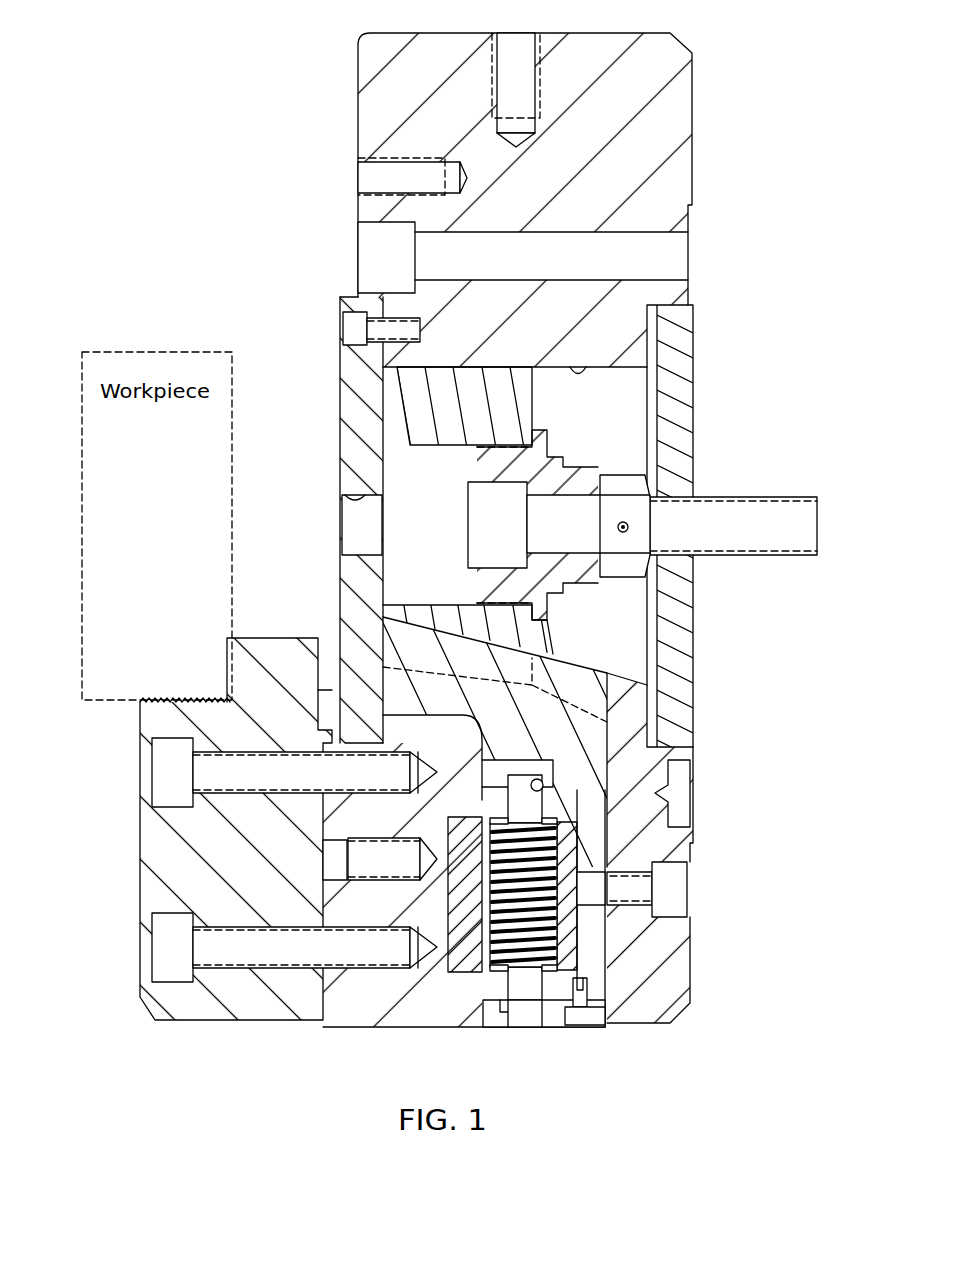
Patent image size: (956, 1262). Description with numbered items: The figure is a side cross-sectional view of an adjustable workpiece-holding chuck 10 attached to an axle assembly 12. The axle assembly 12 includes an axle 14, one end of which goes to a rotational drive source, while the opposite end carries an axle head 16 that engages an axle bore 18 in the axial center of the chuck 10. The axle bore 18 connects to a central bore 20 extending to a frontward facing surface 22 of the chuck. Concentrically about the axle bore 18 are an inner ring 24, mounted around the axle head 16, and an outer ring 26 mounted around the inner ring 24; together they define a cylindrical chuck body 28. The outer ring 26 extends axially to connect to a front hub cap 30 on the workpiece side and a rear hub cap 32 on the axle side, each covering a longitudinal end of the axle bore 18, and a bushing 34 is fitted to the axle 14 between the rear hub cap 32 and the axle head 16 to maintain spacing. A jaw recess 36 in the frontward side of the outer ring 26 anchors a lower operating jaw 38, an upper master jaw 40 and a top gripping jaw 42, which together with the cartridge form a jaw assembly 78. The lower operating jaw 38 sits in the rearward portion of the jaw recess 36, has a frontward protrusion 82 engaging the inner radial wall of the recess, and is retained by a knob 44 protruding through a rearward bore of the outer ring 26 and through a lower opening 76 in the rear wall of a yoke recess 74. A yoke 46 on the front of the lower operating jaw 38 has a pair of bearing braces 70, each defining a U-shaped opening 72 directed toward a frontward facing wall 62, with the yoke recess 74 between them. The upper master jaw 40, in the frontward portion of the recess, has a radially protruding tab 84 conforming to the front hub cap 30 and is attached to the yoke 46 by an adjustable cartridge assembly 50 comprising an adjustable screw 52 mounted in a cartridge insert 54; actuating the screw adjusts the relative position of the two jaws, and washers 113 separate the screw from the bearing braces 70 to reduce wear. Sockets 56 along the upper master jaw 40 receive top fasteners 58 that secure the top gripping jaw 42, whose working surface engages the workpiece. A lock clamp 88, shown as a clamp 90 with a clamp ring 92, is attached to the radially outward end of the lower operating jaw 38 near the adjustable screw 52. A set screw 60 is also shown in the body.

The adjustable workpiece-holding chuck 10 is at (192, 135).
The axle assembly 12 is at (740, 475).
The axle 14 is at (745, 545).
The axle head 16 is at (568, 478).
The axle bore 18 is at (580, 367).
The central bore 20 is at (345, 498).
The frontward facing surface 22 is at (358, 100).
The inner ring 24 is at (440, 378).
The outer ring 26 is at (435, 52).
The cylindrical chuck body 28 is at (348, 132).
The front hub cap 30 is at (345, 398).
The rear hub cap 32 is at (693, 343).
The bushing 34 is at (623, 570).
The jaw recess 36 is at (365, 725).
The lower operating jaw 38 is at (595, 797).
The upper master jaw 40 is at (362, 1005).
The top gripping jaw 42 is at (232, 1000).
The knob 44 is at (672, 880).
The yoke 46 is at (483, 796).
The adjustable cartridge assembly 50 is at (430, 911).
The adjustable screw 52 is at (515, 1020).
The cartridge insert 54 is at (460, 965).
The sockets 56 is at (393, 793).
The top fasteners 58 is at (165, 790).
The set screw 60 is at (370, 248).
The frontward facing wall 62 is at (600, 825).
The bearing braces 70 is at (498, 778).
The U-shaped opening 72 is at (540, 780).
The yoke recess 74 is at (590, 965).
The lower opening 76 is at (585, 920).
The jaw assembly 78 is at (400, 1048).
The frontward protrusion 82 is at (345, 640).
The radially protruding tab 84 is at (318, 692).
The lock clamp 88 is at (580, 1040).
The clamp 90 is at (605, 1028).
The clamp ring 92 is at (617, 1012).
The washers 113 is at (555, 822).